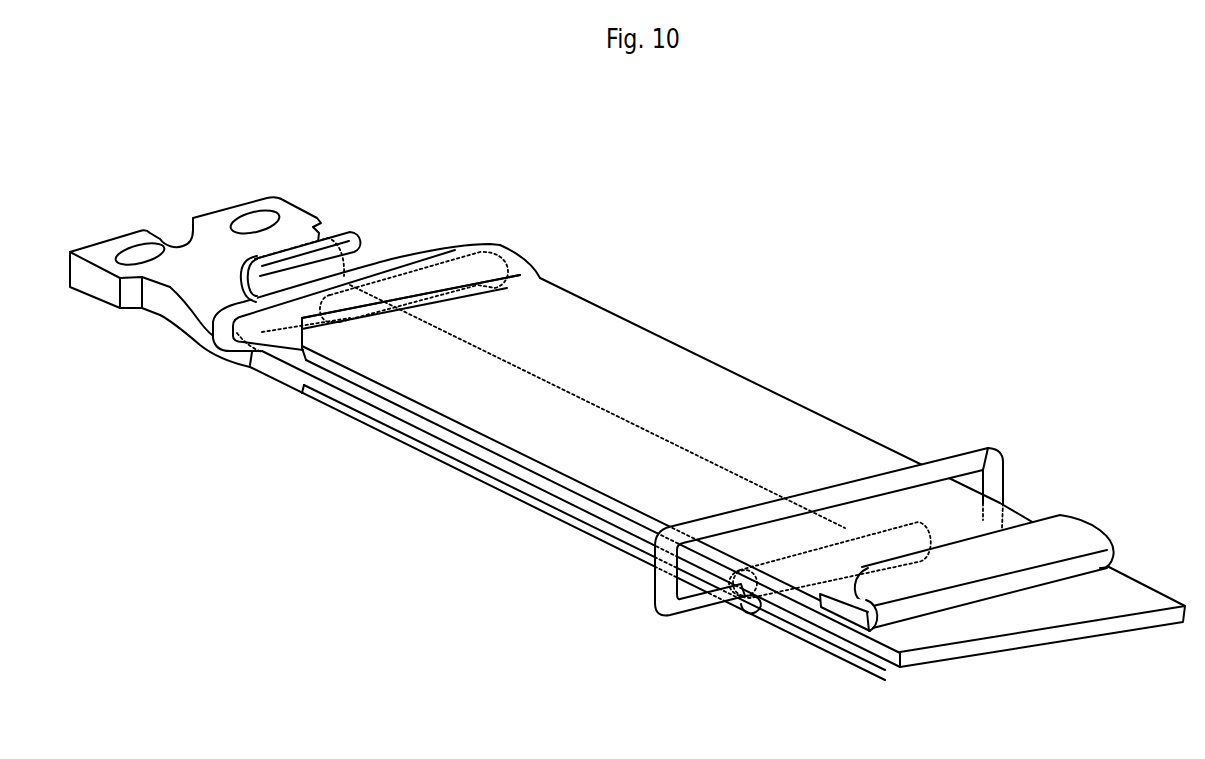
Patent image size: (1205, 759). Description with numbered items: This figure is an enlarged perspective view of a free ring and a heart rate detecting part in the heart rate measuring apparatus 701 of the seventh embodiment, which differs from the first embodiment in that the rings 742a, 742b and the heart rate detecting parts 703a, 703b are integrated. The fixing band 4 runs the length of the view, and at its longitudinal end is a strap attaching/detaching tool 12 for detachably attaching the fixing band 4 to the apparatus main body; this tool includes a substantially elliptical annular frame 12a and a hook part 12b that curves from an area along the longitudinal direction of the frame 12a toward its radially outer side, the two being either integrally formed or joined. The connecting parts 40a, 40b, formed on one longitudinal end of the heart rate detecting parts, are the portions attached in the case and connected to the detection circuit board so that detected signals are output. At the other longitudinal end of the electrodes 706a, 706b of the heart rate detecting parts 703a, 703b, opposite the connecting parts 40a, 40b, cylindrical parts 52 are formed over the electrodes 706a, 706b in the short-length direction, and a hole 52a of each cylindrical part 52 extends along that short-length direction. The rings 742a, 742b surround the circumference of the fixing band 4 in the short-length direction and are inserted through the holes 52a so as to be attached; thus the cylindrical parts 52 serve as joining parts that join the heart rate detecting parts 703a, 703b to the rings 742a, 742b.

The heart rate measuring apparatus 701 is at (770, 190).
The fixing band 4 is at (760, 370).
The strap attaching/detaching tool 12 is at (231, 370).
The frame 12a is at (217, 352).
The hook part 12b is at (278, 254).
The connecting part 40a is at (312, 236).
The connecting part 40b is at (541, 321).
The heart rate detecting part 703a is at (392, 455).
The heart rate detecting part 703b is at (411, 412).
The electrode 706a is at (541, 507).
The electrode 706b is at (567, 523).
The ring 742a is at (994, 452).
The ring 742b is at (919, 486).
The cylindrical part 52 is at (771, 612).
The hole 52a is at (739, 606).